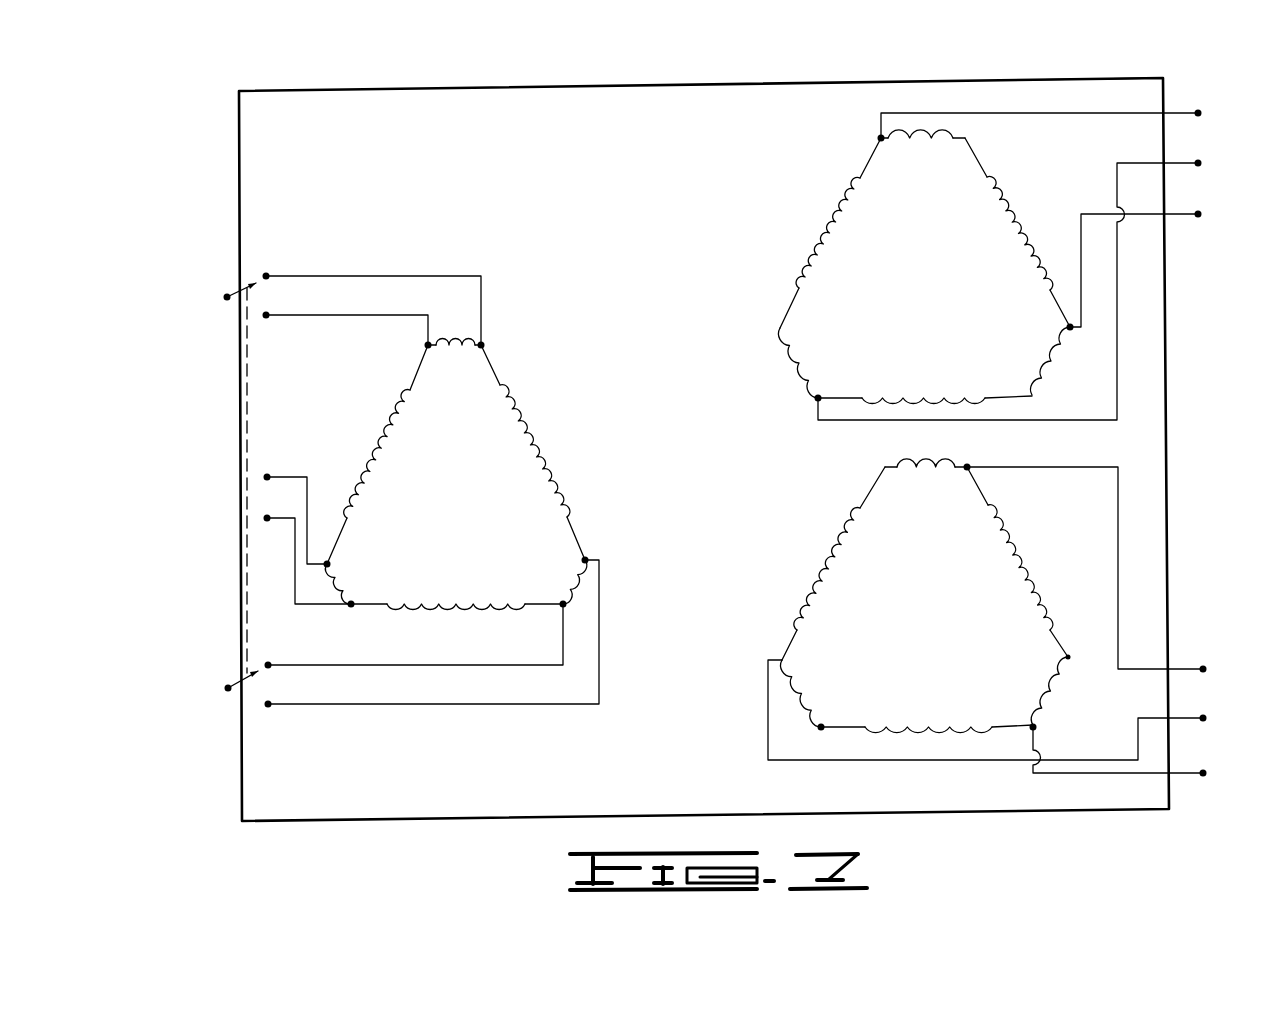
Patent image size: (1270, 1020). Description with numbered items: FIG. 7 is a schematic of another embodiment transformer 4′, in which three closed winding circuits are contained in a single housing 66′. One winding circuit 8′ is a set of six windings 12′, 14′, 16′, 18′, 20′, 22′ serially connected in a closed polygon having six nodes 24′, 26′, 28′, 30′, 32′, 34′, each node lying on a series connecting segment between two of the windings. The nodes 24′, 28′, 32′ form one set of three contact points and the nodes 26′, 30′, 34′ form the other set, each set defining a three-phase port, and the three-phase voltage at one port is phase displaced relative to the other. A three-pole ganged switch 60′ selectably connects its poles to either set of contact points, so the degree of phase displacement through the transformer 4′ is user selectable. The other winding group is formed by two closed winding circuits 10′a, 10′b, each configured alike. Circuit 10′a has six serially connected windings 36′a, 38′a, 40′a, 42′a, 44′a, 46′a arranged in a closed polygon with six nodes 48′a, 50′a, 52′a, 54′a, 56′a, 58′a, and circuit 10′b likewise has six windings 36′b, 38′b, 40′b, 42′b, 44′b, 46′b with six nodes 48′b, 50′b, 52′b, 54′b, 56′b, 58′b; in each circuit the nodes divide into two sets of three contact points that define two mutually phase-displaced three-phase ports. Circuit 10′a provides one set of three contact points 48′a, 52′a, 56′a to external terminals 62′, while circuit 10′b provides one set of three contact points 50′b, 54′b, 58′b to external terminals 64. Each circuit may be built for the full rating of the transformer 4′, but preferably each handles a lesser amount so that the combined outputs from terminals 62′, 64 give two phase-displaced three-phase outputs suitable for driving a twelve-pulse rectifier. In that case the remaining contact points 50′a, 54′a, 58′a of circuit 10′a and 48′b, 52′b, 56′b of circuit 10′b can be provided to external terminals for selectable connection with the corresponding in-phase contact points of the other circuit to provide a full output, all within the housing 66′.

The transformer 4′ is at (807, 60).
The winding circuit 8′ is at (534, 385).
The closed winding circuit 10′a is at (782, 176).
The closed winding circuit 10′b is at (781, 506).
The winding 12′ is at (600, 592).
The winding 14′ is at (453, 608).
The winding 16′ is at (340, 586).
The winding 18′ is at (378, 433).
The winding 20′ is at (462, 343).
The winding 22′ is at (538, 443).
The node 24′ is at (588, 559).
The node 26′ is at (560, 600).
The node 28′ is at (351, 607).
The node 30′ is at (326, 566).
The node 32′ is at (427, 345).
The node 34′ is at (482, 344).
The winding 36′a is at (1047, 377).
The winding 36′b is at (1053, 707).
The winding 38′a is at (922, 396).
The winding 38′b is at (928, 725).
The winding 40′a is at (790, 365).
The winding 40′b is at (798, 707).
The winding 42′a is at (818, 240).
The winding 42′b is at (822, 567).
The winding 44′a is at (915, 132).
The winding 44′b is at (903, 469).
The winding 46′a is at (1027, 233).
The winding 46′b is at (1030, 563).
The node 48′a is at (1068, 326).
The contact point 48′b is at (1067, 656).
The contact point 50′a is at (1034, 398).
The node 50′b is at (1032, 729).
The node 52′a is at (818, 396).
The contact point 52′b is at (821, 729).
The contact point 54′a is at (779, 327).
The node 54′b is at (781, 659).
The node 56′a is at (880, 137).
The contact point 56′b is at (884, 466).
The contact point 58′a is at (964, 138).
The node 58′b is at (968, 465).
The three-pole ganged switch 60′ is at (270, 260).
The external terminals 62′ is at (1200, 278).
The external terminals 64 is at (1206, 645).
The single housing 66′ is at (1027, 79).